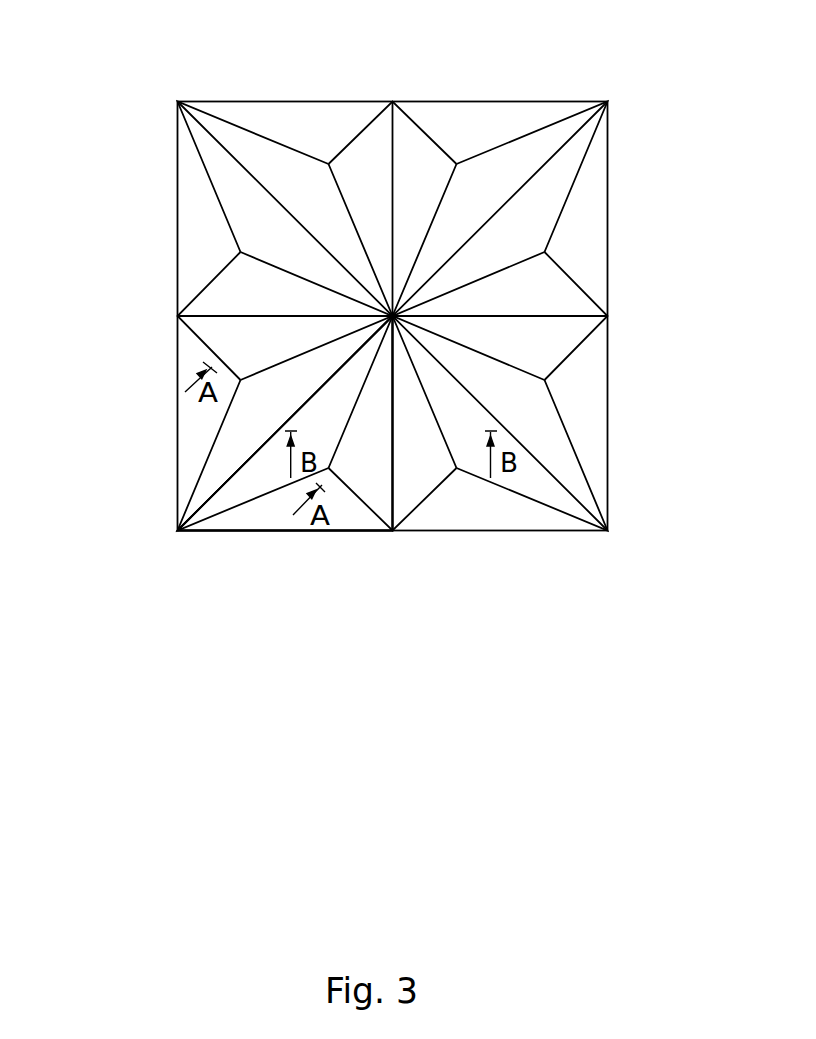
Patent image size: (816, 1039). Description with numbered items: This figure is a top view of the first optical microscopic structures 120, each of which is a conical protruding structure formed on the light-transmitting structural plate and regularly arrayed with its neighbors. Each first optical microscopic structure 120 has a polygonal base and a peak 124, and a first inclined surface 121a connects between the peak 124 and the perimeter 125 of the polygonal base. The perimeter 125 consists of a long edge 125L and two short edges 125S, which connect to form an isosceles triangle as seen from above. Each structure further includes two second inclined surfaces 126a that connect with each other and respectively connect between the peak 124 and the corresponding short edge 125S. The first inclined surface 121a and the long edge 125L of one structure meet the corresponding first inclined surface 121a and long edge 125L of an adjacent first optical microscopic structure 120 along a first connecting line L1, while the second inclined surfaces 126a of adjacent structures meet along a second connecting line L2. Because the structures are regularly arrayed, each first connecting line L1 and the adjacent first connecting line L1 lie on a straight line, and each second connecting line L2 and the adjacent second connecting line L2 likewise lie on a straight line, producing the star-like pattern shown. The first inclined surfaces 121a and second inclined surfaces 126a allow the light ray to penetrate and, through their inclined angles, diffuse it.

The first optical microscopic structure 120 is at (187, 352).
The first inclined surface 121a is at (235, 433).
The peak 124 is at (330, 470).
The perimeter 125 is at (675, 537).
The short edge 125S is at (393, 462).
The long edge 125L is at (305, 405).
The second inclined surface 126a is at (377, 392).
The first connecting line L1 is at (533, 177).
The second connecting line L2 is at (393, 153).